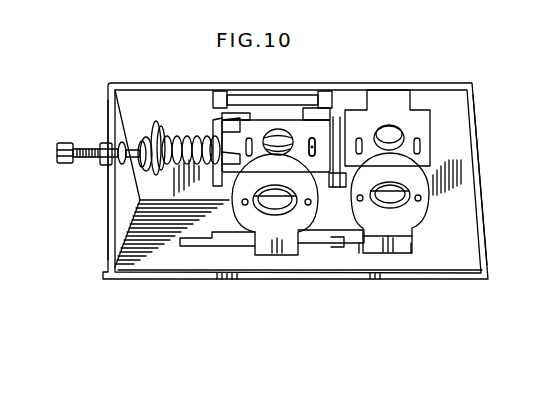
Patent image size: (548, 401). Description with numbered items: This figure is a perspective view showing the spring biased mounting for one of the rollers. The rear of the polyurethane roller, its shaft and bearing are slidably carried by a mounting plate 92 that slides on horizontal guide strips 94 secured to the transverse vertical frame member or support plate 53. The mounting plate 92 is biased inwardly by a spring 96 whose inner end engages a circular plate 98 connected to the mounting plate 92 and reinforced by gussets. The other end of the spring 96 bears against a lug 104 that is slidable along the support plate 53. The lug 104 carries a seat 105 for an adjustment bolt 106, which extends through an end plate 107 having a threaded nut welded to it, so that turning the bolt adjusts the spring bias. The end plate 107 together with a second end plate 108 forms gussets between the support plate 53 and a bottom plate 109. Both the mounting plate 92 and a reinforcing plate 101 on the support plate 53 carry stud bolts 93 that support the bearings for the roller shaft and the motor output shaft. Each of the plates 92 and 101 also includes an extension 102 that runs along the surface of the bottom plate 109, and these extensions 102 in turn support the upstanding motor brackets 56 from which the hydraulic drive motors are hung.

The transverse vertical frame member 53 is at (464, 80).
The upstanding bracket 56 is at (417, 213).
The mounting plate 92 is at (314, 127).
The stud bolts 93 is at (319, 150).
The horizontal guide strips 94 is at (243, 100).
The spring 96 is at (180, 136).
The circular plate 98 is at (215, 165).
The reinforcing plate 101 is at (397, 107).
The extension 102 is at (417, 233).
The lug 104 is at (157, 168).
The seat 105 is at (138, 160).
The adjustment bolt 106 is at (90, 162).
The end plate 107 is at (112, 113).
The end plate 108 is at (474, 160).
The bottom plate 109 is at (441, 263).